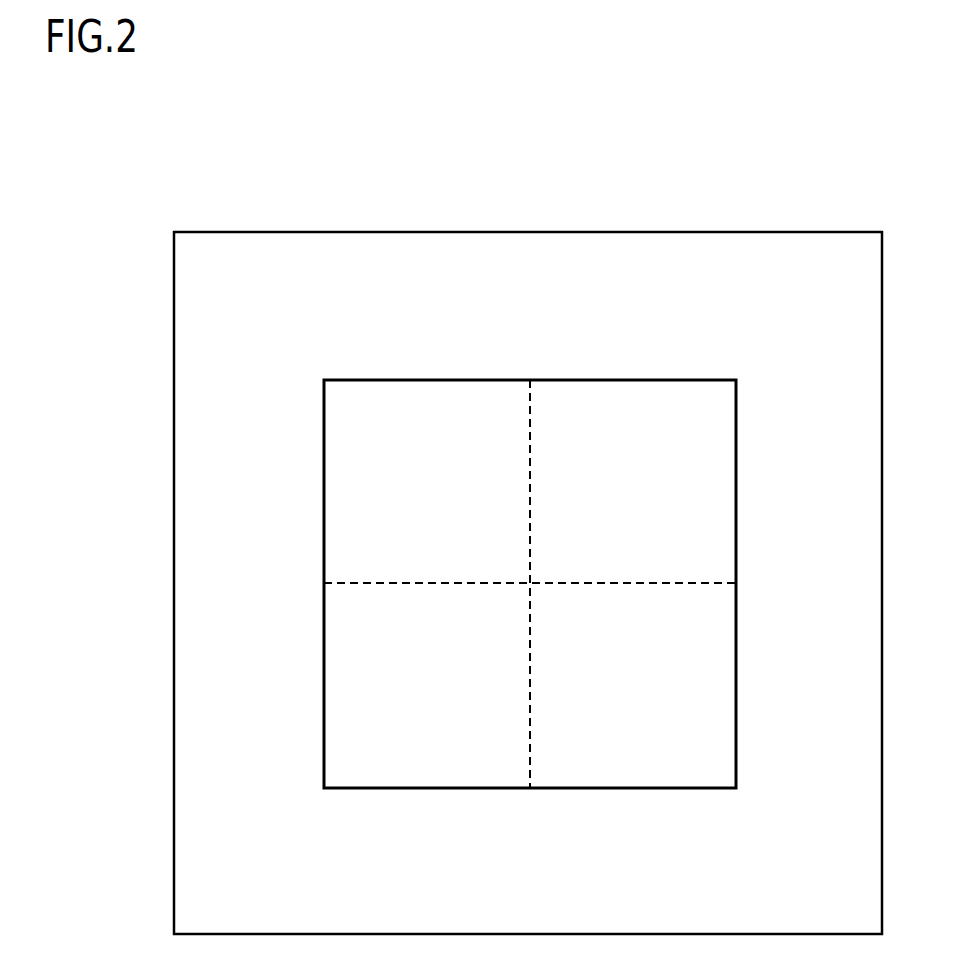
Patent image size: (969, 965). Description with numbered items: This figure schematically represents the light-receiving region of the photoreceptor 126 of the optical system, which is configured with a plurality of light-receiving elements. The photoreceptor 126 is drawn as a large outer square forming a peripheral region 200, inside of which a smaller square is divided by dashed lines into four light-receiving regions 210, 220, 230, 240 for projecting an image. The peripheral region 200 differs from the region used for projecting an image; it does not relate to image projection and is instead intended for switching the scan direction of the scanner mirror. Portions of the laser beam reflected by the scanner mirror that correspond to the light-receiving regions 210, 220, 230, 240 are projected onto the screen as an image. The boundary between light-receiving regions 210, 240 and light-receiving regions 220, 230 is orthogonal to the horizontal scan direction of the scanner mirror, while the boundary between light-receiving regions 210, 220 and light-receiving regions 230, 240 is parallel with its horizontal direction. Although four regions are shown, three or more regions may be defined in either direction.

The photoreceptor 126 is at (212, 152).
The peripheral region 200 is at (827, 247).
The light-receiving region 210 is at (425, 397).
The light-receiving region 220 is at (633, 397).
The light-receiving region 230 is at (637, 773).
The light-receiving region 240 is at (430, 773).